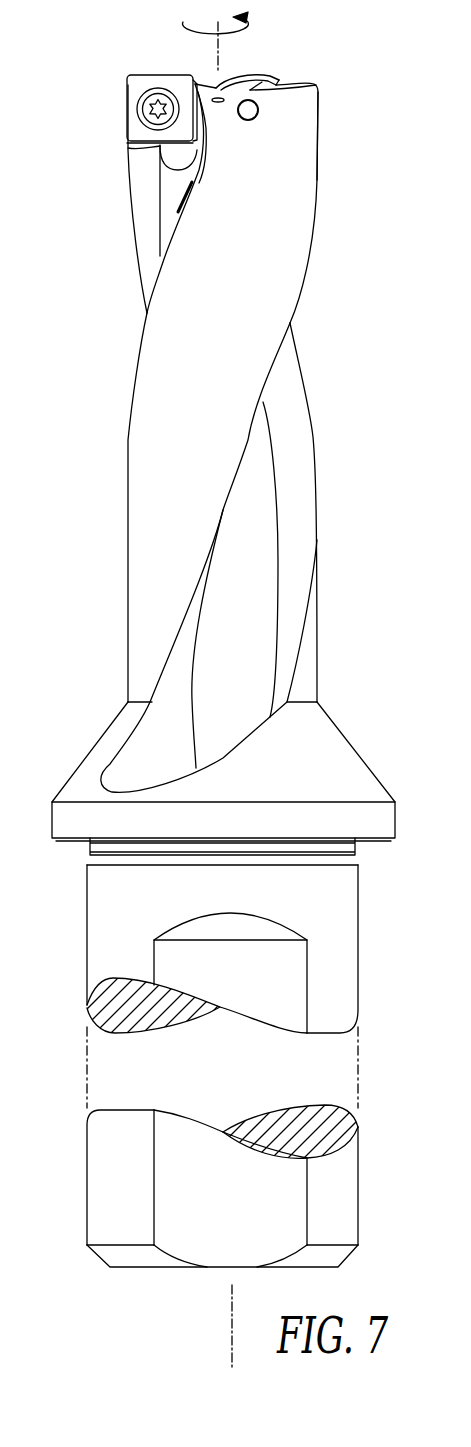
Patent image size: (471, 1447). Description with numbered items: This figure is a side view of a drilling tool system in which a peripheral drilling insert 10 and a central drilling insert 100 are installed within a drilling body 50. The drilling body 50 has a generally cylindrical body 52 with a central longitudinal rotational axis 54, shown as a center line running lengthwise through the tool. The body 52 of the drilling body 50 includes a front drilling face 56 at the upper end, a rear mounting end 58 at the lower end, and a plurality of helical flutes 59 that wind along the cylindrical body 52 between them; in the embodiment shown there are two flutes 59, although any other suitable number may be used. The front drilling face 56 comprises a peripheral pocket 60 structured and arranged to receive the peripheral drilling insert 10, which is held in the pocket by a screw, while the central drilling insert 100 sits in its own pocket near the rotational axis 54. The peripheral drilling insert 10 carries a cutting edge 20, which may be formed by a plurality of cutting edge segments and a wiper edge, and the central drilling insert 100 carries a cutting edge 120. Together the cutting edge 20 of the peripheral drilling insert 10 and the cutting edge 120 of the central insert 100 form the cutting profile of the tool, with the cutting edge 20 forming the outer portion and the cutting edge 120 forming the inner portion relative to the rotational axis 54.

The peripheral drilling insert 10 is at (130, 68).
The cutting edge 20 is at (153, 65).
The drilling body 50 is at (322, 433).
The generally cylindrical body 52 is at (150, 488).
The central longitudinal rotational axis 54 is at (214, 57).
The front drilling face 56 is at (298, 88).
The rear mounting end 58 is at (342, 1193).
The helical flutes 59 is at (160, 203).
The peripheral pocket 60 is at (178, 137).
The central drilling insert 100 is at (264, 66).
The cutting edge 120 is at (248, 66).